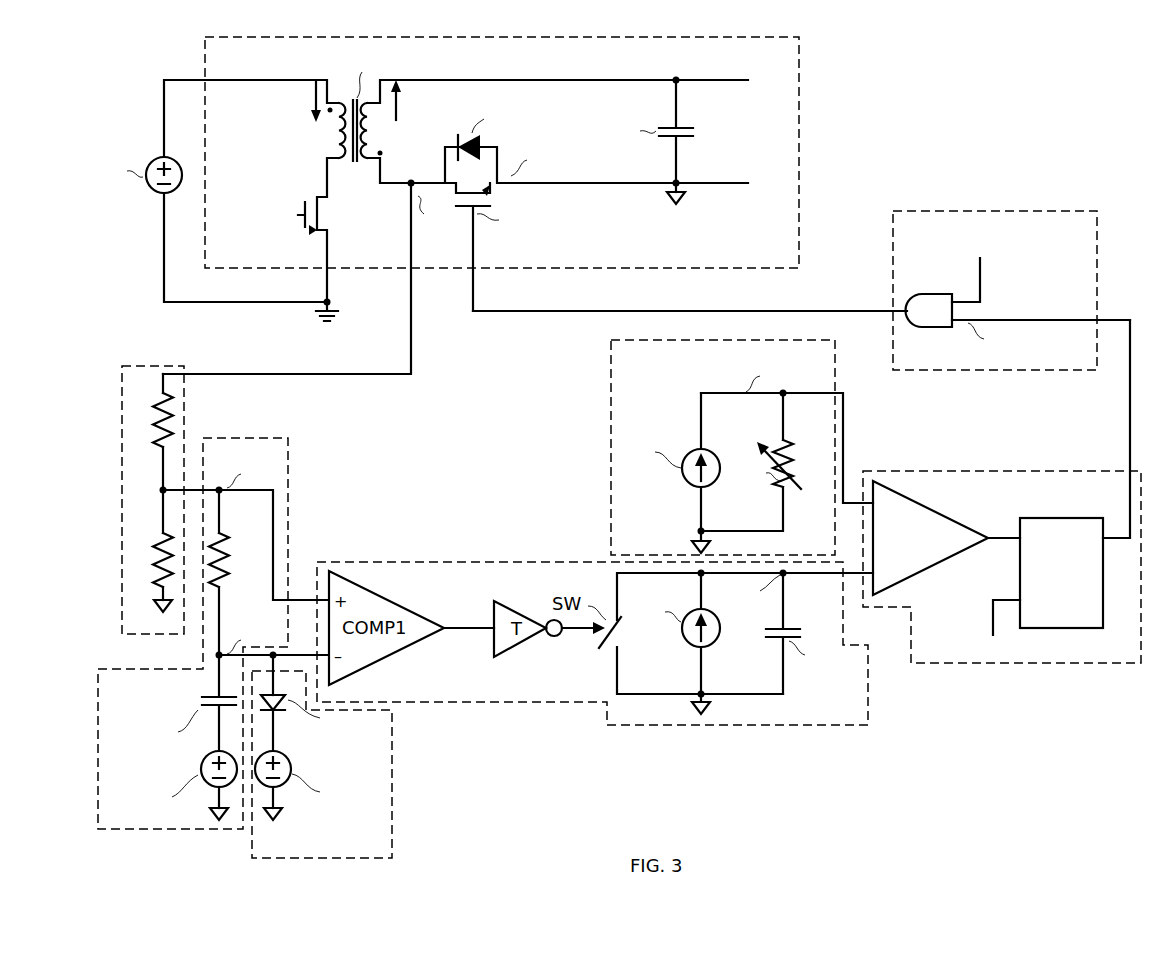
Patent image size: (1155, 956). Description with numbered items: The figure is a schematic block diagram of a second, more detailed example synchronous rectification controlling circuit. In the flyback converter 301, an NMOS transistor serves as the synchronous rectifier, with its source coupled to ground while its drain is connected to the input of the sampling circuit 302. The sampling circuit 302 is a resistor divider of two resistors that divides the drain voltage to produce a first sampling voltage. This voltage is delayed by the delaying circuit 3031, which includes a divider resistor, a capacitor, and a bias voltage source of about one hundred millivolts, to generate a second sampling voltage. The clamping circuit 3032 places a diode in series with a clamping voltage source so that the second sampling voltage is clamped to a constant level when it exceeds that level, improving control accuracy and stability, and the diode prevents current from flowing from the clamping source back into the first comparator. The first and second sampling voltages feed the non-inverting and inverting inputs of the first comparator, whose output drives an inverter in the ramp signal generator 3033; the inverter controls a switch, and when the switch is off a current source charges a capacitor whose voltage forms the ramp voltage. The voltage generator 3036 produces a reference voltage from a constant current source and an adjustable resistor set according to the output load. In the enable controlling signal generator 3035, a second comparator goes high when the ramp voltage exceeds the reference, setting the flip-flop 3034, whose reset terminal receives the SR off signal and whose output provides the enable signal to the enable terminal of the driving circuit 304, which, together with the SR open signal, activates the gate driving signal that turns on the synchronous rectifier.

The flyback converter 301 is at (449, 205).
The sampling circuit 302 is at (153, 500).
The delaying circuit 3031 is at (213, 633).
The clamping circuit 3032 is at (322, 755).
The ramp signal generator 3033 is at (745, 647).
The flip-flop 3034 is at (1061, 477).
The enable controlling signal generator 3035 is at (1002, 567).
The voltage generator 3036 is at (742, 447).
The driving circuit 304 is at (801, 290).